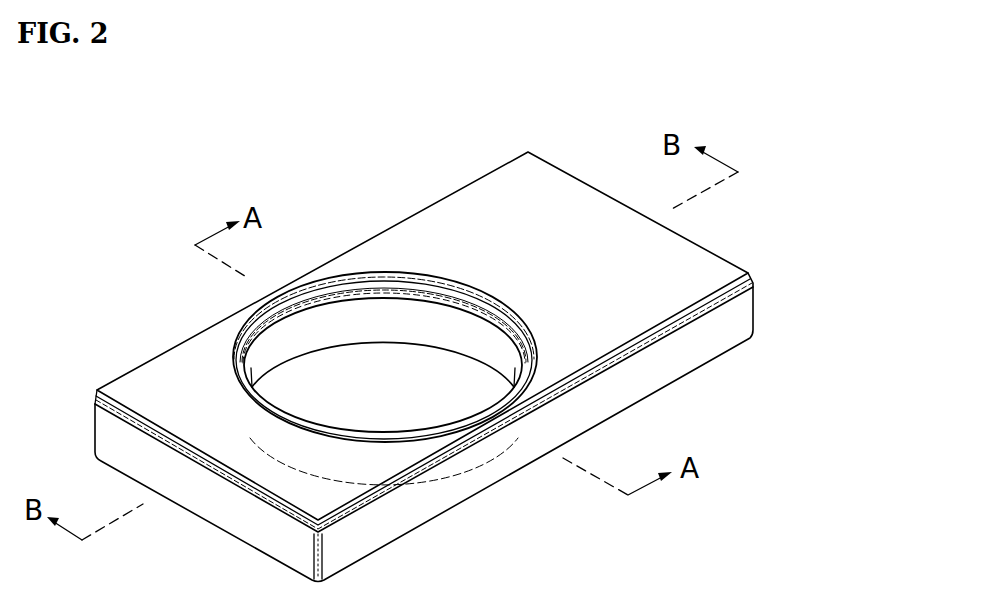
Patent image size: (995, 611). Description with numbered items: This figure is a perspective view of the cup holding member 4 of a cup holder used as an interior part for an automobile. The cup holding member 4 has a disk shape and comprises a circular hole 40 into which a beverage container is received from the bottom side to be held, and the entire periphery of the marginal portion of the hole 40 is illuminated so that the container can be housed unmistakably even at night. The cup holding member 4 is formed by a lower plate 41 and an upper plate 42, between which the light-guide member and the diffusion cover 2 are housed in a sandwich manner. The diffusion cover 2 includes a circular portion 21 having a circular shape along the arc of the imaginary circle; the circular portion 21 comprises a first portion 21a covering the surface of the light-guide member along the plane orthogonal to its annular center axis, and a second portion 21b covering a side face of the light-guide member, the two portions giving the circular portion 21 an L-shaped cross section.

The cup holding member 4 is at (520, 122).
The upper plate 42 is at (502, 192).
The lower plate 41 is at (722, 337).
The hole 40 is at (368, 318).
The diffusion cover 2 is at (235, 328).
The circular portion 21 is at (432, 275).
The first portion 21a is at (470, 292).
The second portion 21b is at (514, 323).